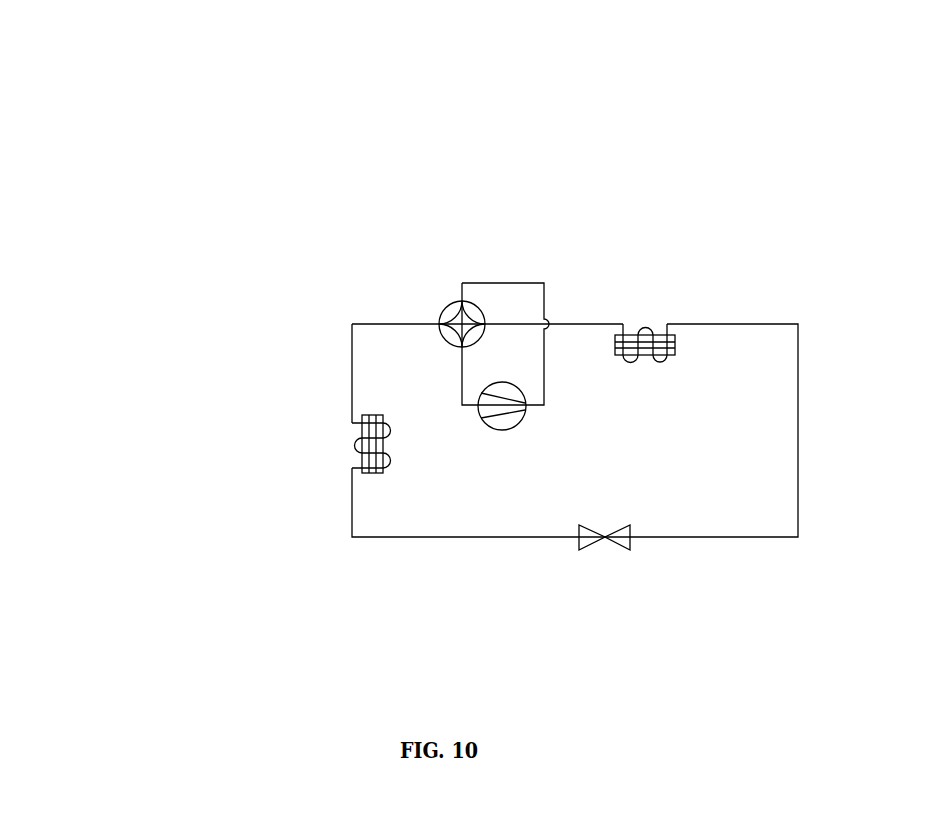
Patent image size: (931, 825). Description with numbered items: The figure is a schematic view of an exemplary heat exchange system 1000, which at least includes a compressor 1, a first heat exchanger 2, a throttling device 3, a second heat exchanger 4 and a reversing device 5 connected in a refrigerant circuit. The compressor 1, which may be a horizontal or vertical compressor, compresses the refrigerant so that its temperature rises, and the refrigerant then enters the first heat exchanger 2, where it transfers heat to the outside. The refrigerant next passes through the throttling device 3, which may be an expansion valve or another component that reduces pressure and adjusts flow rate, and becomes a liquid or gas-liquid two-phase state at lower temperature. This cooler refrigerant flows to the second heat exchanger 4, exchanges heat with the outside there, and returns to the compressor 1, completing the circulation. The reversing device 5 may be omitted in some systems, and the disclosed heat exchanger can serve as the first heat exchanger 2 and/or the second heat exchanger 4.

The heat exchange system 1000 is at (313, 198).
The compressor 1 is at (493, 403).
The first heat exchanger 2 is at (660, 327).
The throttling device 3 is at (630, 550).
The second heat exchanger 4 is at (358, 462).
The reversing device 5 is at (450, 313).